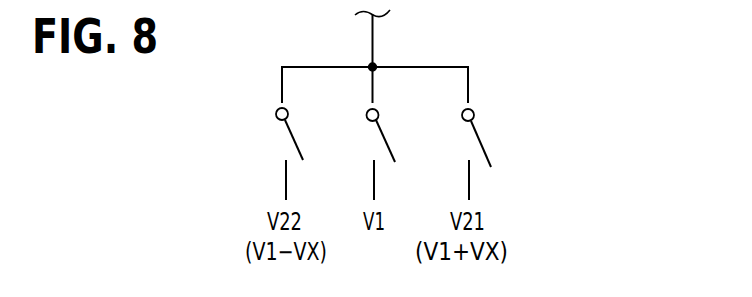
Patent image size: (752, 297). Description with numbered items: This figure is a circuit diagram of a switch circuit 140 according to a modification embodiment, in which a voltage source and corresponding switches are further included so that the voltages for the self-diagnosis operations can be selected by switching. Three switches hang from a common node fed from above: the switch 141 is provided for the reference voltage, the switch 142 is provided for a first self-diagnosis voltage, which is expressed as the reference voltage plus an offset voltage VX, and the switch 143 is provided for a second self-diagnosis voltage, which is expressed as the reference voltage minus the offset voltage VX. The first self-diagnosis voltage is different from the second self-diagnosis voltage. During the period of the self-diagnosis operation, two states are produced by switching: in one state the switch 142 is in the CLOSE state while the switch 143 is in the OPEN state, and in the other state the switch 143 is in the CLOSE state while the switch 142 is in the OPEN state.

The switch circuit 140 is at (510, 89).
The switch 141 is at (390, 148).
The switch 142 is at (482, 143).
The switch 143 is at (292, 135).